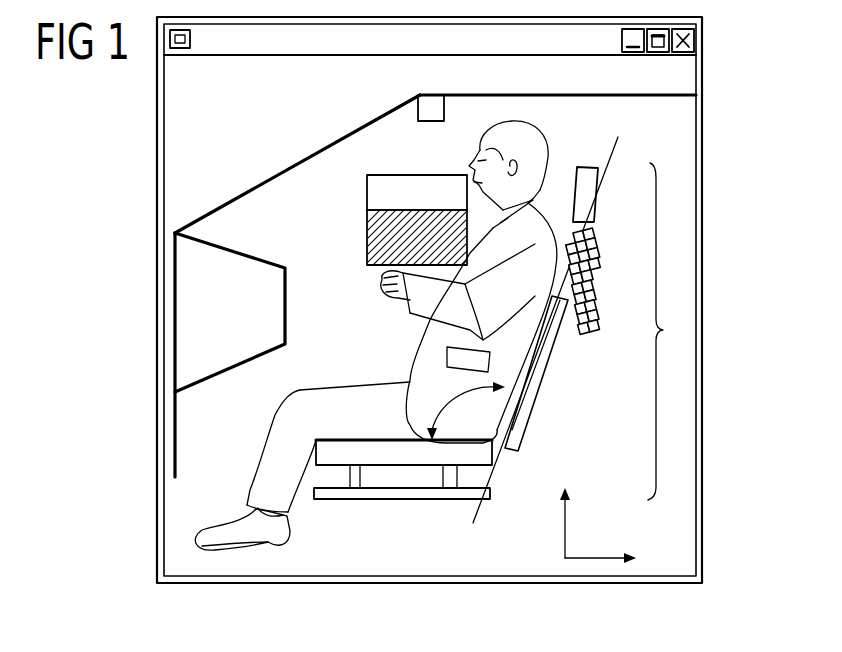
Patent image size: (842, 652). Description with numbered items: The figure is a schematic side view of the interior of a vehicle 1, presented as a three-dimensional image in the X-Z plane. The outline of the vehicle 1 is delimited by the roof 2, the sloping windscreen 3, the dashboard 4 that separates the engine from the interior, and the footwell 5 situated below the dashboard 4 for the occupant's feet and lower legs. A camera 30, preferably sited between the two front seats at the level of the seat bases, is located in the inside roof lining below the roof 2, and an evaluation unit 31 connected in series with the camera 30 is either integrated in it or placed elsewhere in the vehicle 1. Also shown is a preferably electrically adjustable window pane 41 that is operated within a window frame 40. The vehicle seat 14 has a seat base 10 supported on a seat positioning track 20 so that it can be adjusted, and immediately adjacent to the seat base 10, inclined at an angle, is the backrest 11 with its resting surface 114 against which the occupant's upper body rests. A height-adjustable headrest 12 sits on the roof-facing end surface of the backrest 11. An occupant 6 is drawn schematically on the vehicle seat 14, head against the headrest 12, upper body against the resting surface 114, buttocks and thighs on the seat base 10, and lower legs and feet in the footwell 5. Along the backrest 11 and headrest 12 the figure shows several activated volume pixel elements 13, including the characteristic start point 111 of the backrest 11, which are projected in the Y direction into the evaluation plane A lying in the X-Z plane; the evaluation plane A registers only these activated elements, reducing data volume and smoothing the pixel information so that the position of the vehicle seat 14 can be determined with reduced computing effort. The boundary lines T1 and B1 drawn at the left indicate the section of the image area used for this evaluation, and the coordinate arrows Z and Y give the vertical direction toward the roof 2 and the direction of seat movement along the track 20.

The vehicle 1 is at (732, 118).
The roof 2 is at (583, 100).
The sloping windscreen 3 is at (297, 162).
The dashboard 4 is at (287, 317).
The footwell 5 is at (250, 388).
The occupant 6 is at (275, 462).
The seat base 10 is at (380, 455).
The backrest 11 is at (537, 369).
The headrest 12 is at (593, 188).
The volume pixel elements 13 is at (604, 281).
The evaluation plane A is at (604, 281).
The vehicle seat 14 is at (672, 331).
The seat positioning track 20 is at (418, 500).
The camera 30 is at (373, 99).
The evaluation unit 31 is at (407, 107).
The window frame 40 is at (406, 201).
The window pane 41 is at (385, 235).
The start point 111 is at (590, 240).
The resting surface 114 is at (535, 398).
The top boundary T1 is at (158, 172).
The bottom boundary B1 is at (158, 258).
The Z direction Z is at (568, 511).
The Y direction Y is at (610, 561).